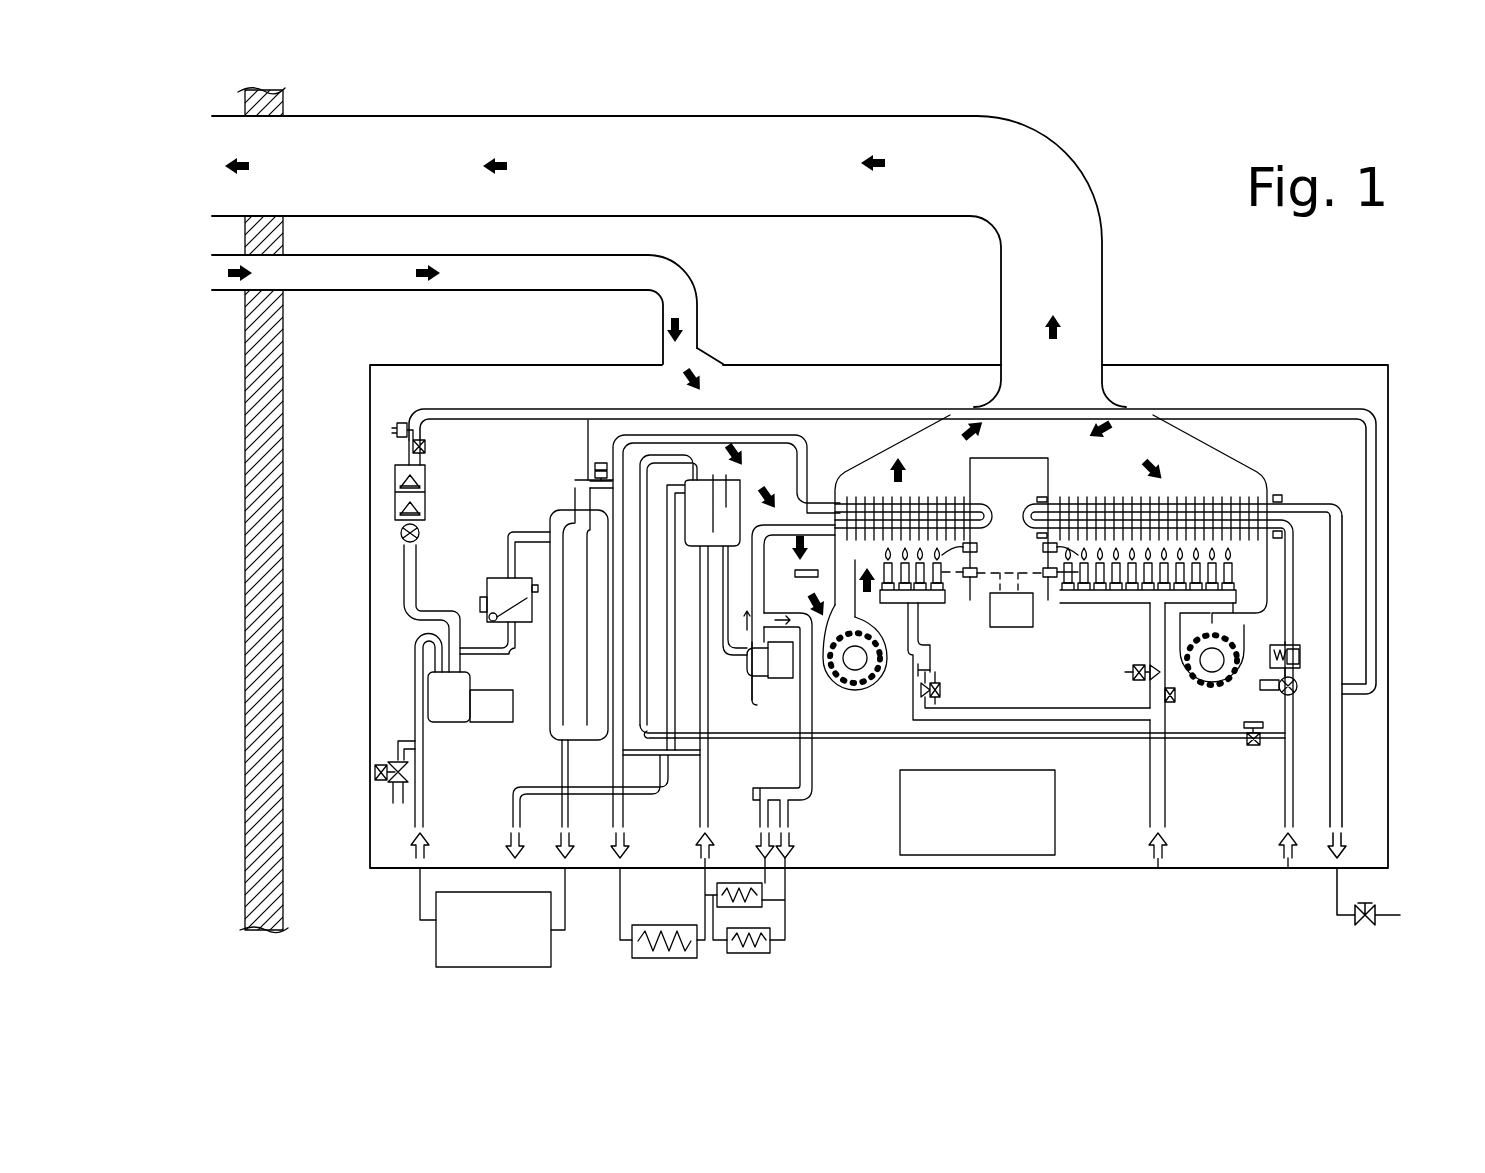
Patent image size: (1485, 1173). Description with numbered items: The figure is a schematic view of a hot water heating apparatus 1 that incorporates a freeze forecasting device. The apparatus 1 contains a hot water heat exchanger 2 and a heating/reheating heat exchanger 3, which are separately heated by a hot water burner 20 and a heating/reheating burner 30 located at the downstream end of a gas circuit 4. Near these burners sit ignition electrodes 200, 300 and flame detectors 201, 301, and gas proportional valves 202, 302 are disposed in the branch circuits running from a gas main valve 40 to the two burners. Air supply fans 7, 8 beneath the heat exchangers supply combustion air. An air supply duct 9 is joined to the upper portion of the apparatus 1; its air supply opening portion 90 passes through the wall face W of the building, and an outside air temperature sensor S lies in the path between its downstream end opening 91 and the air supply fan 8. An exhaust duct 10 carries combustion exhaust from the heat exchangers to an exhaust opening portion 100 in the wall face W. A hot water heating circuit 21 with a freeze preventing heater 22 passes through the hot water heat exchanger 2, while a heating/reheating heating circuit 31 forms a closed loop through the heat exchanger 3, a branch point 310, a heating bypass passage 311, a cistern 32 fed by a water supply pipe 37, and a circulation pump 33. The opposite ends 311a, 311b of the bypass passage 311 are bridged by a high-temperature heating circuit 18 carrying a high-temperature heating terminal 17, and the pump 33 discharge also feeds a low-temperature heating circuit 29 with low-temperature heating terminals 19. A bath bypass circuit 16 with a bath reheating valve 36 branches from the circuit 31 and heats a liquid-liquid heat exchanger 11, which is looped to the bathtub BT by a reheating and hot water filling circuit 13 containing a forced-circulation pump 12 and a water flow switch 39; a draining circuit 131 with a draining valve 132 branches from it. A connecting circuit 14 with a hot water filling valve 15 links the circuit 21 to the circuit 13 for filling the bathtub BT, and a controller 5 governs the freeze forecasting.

The hot water heating apparatus 1 is at (1244, 350).
The hot water heat exchanger 2 is at (1200, 418).
The heating/reheating heat exchanger 3 is at (912, 434).
The gas circuit 4 is at (1150, 800).
The controller 5 is at (993, 858).
The air supply fan 7 is at (1230, 690).
The air supply fan 8 is at (880, 690).
The air supply duct 9 is at (684, 268).
The exhaust duct 10 is at (1103, 248).
The liquid-liquid heat exchanger 11 is at (552, 517).
The forced-circulation pump 12 is at (438, 683).
The reheating and hot water filling circuit 13 is at (413, 820).
The connecting circuit 14 is at (1378, 553).
The hot water filling valve 15 is at (427, 440).
The bath bypass circuit 16 is at (577, 481).
The high-temperature heating terminal 17 is at (648, 925).
The high-temperature heating circuit 18 is at (702, 905).
The low-temperature heating terminal 19 is at (770, 936).
The hot water burner 20 is at (1130, 602).
The hot water heating circuit 21 is at (1245, 505).
The freeze preventing heater 22 is at (1040, 534).
The low-temperature heating circuit 29 is at (770, 880).
The heating/reheating burner 30 is at (942, 690).
The heating/reheating heating circuit 31 is at (810, 503).
The cistern 32 is at (722, 480).
The circulation pump 33 is at (793, 660).
The bath reheating valve 36 is at (590, 465).
The water supply pipe 37 is at (1137, 733).
The water flow switch 39 is at (500, 585).
The gas main valve 40 is at (1172, 700).
The air supply opening portion 90 is at (210, 272).
The downstream end opening 91 is at (666, 362).
The exhaust opening portion 100 is at (212, 183).
The draining circuit 131 is at (403, 743).
The draining valve 132 is at (378, 765).
The ignition electrode 200 is at (1050, 577).
The flame detector 201 is at (1052, 543).
The gas proportional valve 202 is at (1130, 700).
The ignition electrode 300 is at (970, 577).
The flame detector 301 is at (970, 543).
The gas proportional valve 302 is at (940, 697).
The branch point 310 is at (620, 478).
The heating bypass passage 311 is at (713, 760).
The end of heating bypass passage 311a is at (620, 813).
The end of heating bypass passage 311b is at (708, 813).
The outside air temperature sensor S is at (792, 573).
The wall face W is at (245, 640).
The bathtub BT is at (493, 929).